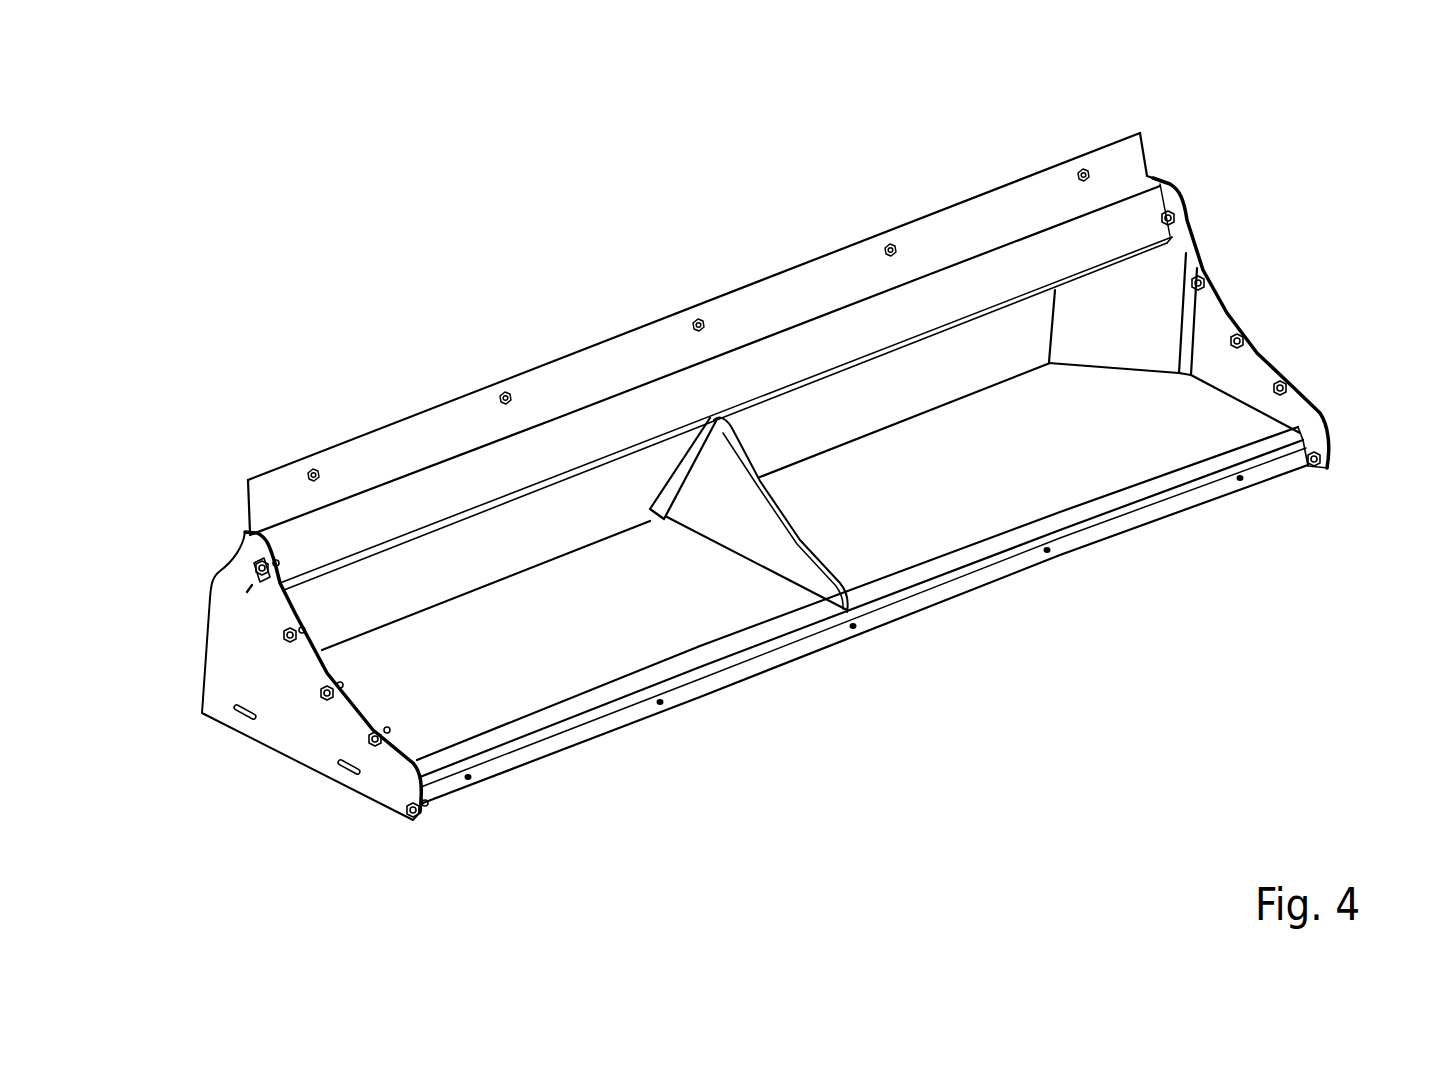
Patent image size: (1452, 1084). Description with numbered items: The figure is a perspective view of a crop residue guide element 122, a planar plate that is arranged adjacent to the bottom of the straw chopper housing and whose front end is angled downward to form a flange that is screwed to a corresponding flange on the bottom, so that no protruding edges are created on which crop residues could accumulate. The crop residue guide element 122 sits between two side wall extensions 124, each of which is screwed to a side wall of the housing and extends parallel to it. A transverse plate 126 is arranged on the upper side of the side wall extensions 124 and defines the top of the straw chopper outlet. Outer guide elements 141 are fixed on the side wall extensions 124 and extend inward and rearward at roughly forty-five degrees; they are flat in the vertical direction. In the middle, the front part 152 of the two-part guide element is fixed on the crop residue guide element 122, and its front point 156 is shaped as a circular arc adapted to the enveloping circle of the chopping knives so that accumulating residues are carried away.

The crop residue guide element 122 is at (565, 293).
The side wall extension 124 is at (292, 732).
The transverse plate 126 is at (382, 452).
The outer guide element 141 is at (1142, 300).
The front part 152 is at (727, 510).
The front point 156 is at (788, 529).